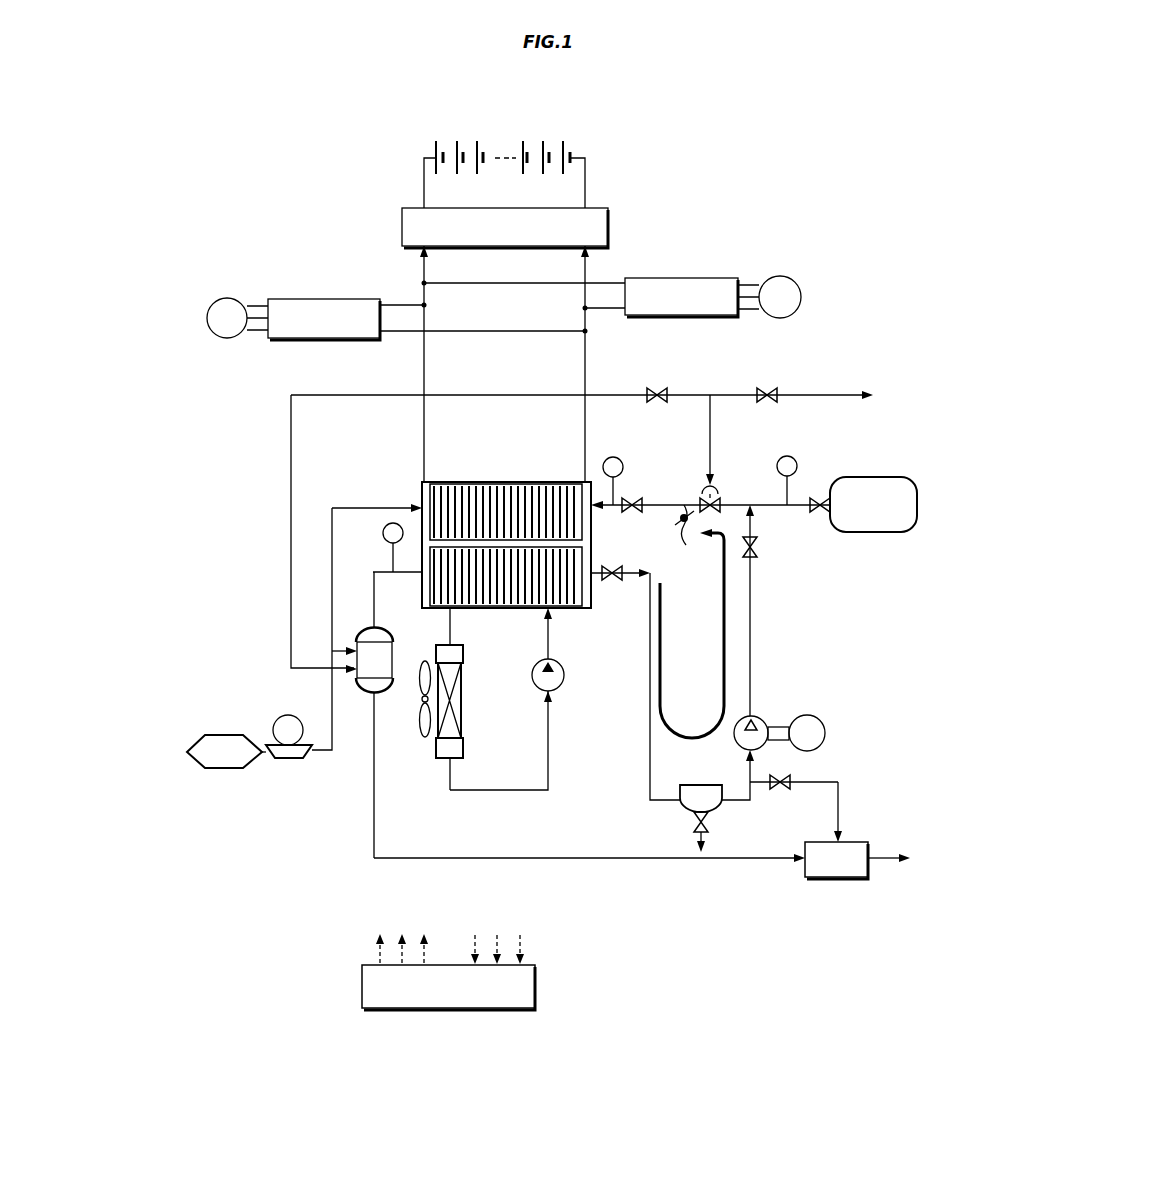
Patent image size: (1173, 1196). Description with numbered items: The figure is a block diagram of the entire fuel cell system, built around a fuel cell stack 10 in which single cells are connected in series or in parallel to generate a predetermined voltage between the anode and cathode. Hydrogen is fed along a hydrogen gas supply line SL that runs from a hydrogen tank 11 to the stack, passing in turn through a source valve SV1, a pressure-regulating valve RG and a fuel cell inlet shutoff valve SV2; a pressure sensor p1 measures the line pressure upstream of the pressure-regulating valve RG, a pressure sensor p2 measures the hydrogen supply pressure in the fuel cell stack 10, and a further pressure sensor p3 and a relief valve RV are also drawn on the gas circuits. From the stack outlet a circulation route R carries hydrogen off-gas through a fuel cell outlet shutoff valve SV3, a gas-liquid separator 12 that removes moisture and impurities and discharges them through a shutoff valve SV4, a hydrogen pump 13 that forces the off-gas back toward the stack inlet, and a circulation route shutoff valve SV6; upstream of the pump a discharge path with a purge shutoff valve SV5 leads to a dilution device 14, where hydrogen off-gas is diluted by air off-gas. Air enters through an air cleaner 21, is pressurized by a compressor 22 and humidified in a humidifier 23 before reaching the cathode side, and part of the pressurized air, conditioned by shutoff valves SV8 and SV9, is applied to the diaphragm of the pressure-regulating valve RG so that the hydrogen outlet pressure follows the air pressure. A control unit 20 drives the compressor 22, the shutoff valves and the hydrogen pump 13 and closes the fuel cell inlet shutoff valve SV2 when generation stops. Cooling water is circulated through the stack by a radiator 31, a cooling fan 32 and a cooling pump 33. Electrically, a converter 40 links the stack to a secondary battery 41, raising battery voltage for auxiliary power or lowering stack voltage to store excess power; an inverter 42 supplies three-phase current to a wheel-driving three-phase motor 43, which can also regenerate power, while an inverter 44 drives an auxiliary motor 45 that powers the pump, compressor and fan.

The fuel cell stack 10 is at (525, 482).
The hydrogen tank 11 is at (873, 477).
The gas-liquid separator 12 is at (710, 785).
The hydrogen pump 13 is at (766, 720).
The dilution device 14 is at (855, 842).
The control unit 20 is at (537, 990).
The air cleaner 21 is at (228, 735).
The compressor 22 is at (292, 715).
The humidifier 23 is at (382, 630).
The radiator 31 is at (462, 645).
The cooling fan 32 is at (420, 700).
The cooling pump 33 is at (565, 672).
The converter 40 is at (612, 226).
The secondary battery 41 is at (582, 150).
The inverter 42 is at (695, 278).
The three-phase motor 43 is at (801, 292).
The inverter 44 is at (335, 299).
The auxiliary motor 45 is at (226, 298).
The source valve SV1 is at (822, 497).
The fuel cell inlet shutoff valve SV2 is at (636, 497).
The fuel cell outlet shutoff valve SV3 is at (618, 566).
The shutoff valve for gas-liquid separator SV4 is at (708, 826).
The purge shutoff valve SV5 is at (778, 792).
The circulation route shutoff valve SV6 is at (757, 552).
The shutoff valve SV8 is at (660, 388).
The shutoff valve SV9 is at (770, 388).
The pressure-regulating valve RG is at (718, 490).
The relief valve RV is at (686, 500).
The hydrogen gas supply line SL is at (797, 506).
The circulation route R is at (692, 633).
The pressure sensor p1 is at (790, 456).
The pressure sensor p2 is at (615, 457).
The pressure sensor p3 is at (383, 531).